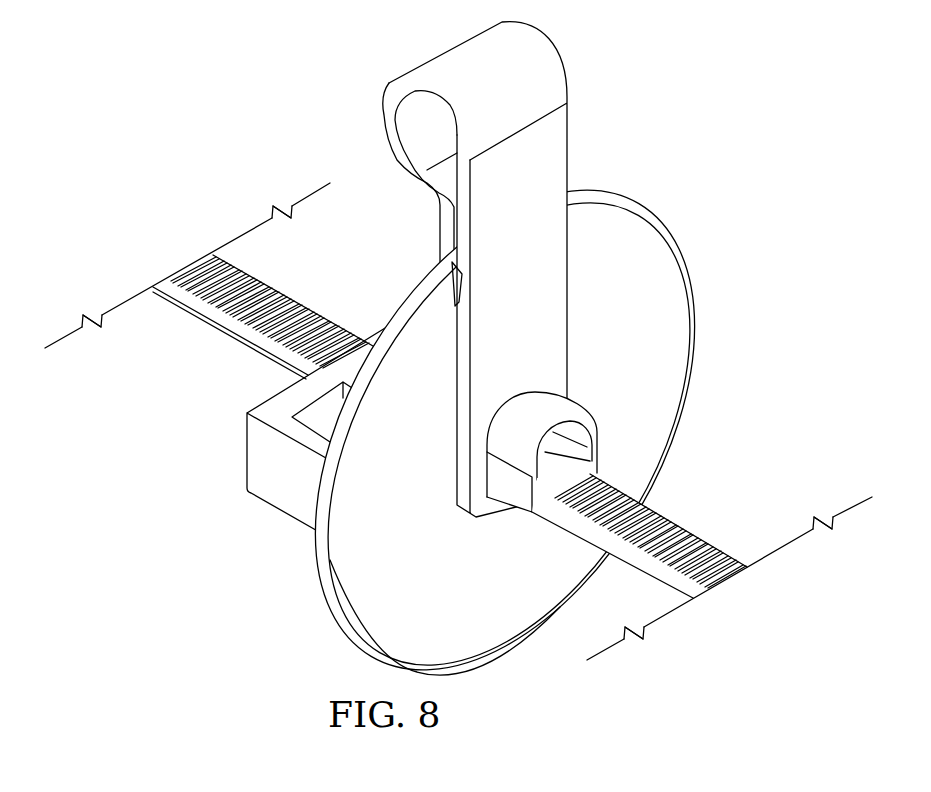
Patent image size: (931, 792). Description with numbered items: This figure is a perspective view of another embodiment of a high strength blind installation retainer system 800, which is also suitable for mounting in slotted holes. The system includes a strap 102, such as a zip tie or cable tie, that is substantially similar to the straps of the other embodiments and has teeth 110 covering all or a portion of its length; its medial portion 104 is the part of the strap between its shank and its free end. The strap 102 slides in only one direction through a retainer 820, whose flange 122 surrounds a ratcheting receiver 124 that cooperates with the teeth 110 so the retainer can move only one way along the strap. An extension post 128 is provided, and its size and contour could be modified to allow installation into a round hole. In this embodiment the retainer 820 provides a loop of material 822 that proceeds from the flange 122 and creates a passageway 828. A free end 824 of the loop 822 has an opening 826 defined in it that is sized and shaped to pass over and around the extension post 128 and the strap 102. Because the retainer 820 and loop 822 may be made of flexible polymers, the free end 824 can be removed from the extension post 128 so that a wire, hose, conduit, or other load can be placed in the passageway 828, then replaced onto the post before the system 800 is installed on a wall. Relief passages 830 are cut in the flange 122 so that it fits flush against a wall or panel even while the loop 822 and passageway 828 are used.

The high strength blind installation retainer system 800 is at (505, 377).
The loop of material 822 is at (557, 62).
The retainer 820 is at (658, 214).
The passageway 828 is at (390, 173).
The relief passages 830 is at (464, 285).
The ratcheting receiver 124 is at (370, 306).
The medial portion 104 is at (232, 334).
The opening 826 is at (518, 392).
The extension post 128 is at (580, 408).
The teeth 110 is at (704, 540).
The strap 102 is at (554, 531).
The free end 824 is at (330, 609).
The flange 122 is at (497, 654).